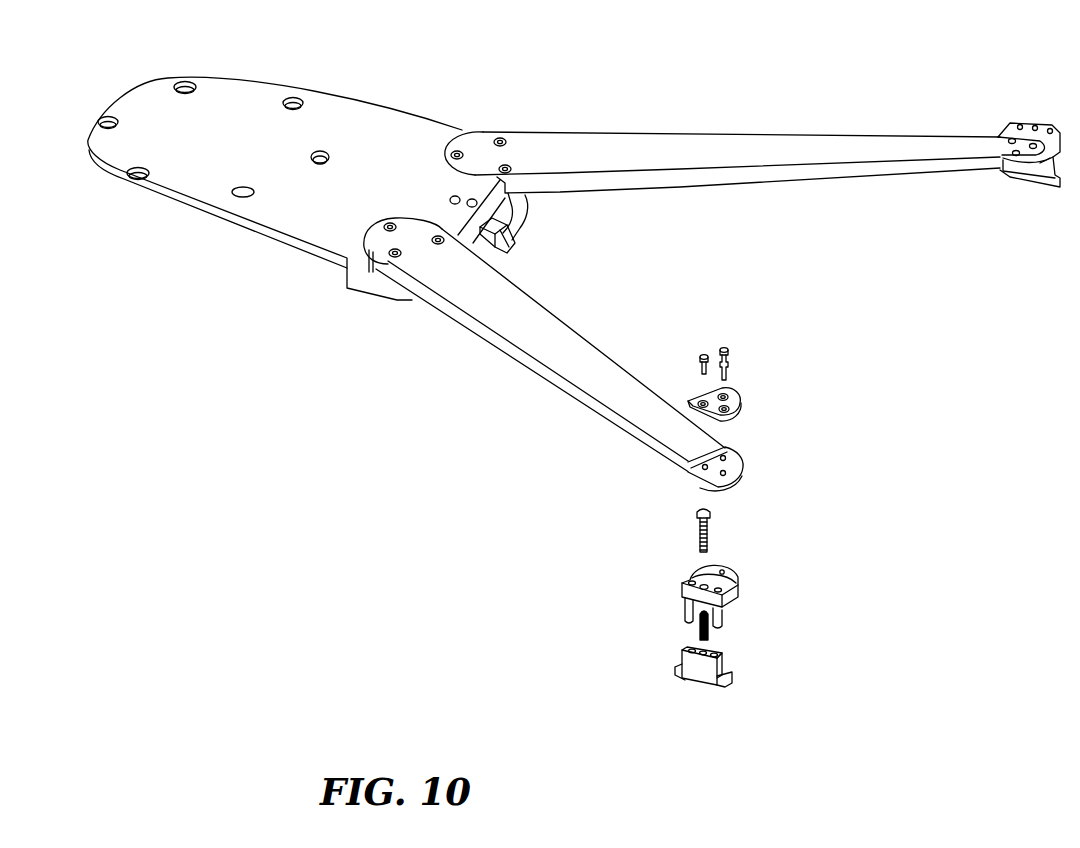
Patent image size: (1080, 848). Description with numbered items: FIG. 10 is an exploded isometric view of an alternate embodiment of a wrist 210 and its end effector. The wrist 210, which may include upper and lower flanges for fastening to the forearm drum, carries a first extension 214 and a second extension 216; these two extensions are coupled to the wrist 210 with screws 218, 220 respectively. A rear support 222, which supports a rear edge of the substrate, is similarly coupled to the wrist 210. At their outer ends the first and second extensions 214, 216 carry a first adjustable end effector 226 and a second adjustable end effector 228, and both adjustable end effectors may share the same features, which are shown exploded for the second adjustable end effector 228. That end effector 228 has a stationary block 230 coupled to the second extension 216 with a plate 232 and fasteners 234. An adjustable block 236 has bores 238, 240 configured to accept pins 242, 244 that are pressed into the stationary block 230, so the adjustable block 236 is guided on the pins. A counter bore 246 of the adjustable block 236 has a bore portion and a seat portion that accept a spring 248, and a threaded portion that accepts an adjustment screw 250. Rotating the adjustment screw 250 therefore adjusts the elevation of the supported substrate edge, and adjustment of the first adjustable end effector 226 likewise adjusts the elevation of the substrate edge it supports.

The wrist 210 is at (360, 100).
The first extension 214 is at (715, 132).
The second extension 216 is at (576, 327).
The screw 218 is at (500, 138).
The screw 220 is at (390, 223).
The rear support 222 is at (520, 245).
The first adjustable end effector 226 is at (1017, 123).
The second adjustable end effector 228 is at (713, 683).
The stationary block 230 is at (745, 572).
The plate 232 is at (740, 397).
The fasteners 234 is at (728, 348).
The adjustable block 236 is at (717, 685).
The bore 238 is at (727, 655).
The bore 240 is at (685, 650).
The pin 242 is at (728, 628).
The pin 244 is at (687, 608).
The counter bore 246 is at (700, 663).
The spring 248 is at (700, 636).
The adjustment screw 250 is at (713, 528).